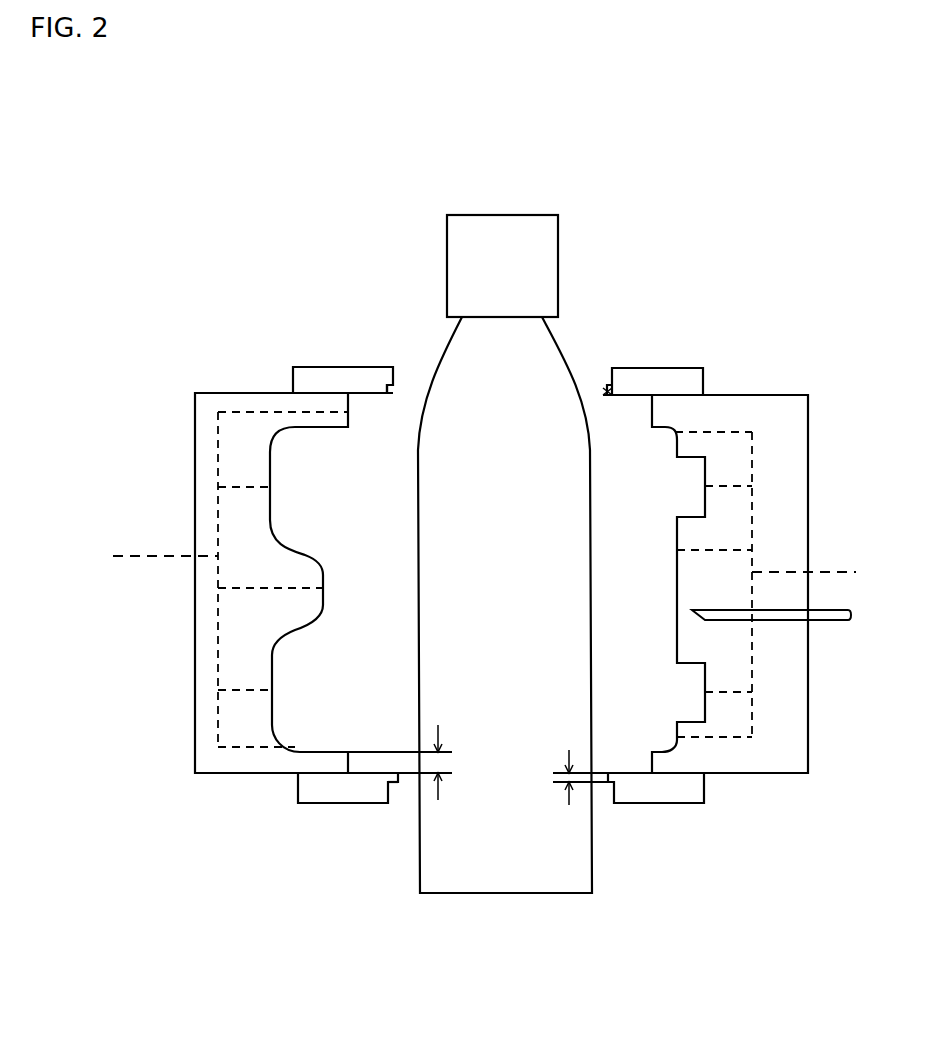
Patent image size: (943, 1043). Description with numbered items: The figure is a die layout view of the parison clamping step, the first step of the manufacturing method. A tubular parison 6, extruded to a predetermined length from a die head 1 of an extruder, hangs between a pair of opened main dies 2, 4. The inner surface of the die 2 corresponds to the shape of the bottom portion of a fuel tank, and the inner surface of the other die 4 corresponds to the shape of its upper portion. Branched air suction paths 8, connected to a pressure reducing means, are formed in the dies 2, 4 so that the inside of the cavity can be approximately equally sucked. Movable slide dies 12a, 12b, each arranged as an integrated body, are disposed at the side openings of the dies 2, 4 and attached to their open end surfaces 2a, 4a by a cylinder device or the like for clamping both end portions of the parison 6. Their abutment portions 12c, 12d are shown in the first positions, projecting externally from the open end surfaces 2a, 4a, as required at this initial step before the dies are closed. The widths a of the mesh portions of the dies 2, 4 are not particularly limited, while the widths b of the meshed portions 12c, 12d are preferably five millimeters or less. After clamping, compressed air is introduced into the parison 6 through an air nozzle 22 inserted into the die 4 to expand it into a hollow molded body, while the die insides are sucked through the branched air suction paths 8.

The die head 1 is at (504, 238).
The die 2 is at (210, 704).
The open end surface 2a is at (352, 420).
The die 4 is at (768, 758).
The open end surface 4a is at (650, 413).
The parison 6 is at (511, 880).
The branched air suction path 8 is at (162, 556).
The slide die 12a is at (325, 380).
The slide die 12b is at (680, 390).
The abutment portion 12c is at (392, 388).
The abutment portion 12d is at (608, 392).
The air nozzle 22 is at (830, 620).
The width of mesh portion a is at (449, 762).
The width of meshed portion b is at (552, 777).